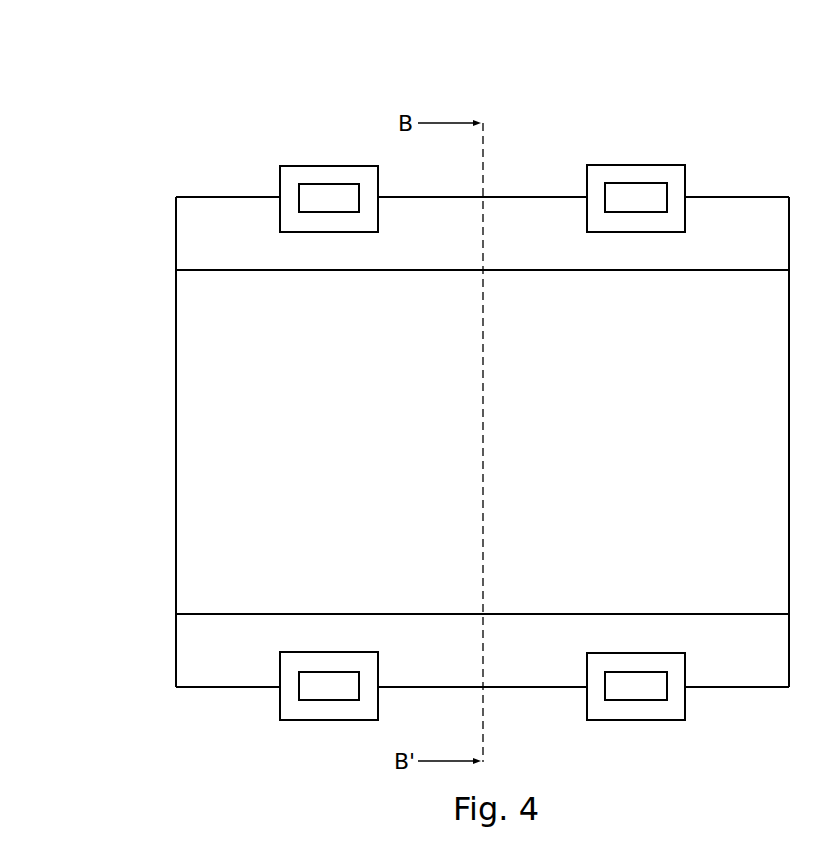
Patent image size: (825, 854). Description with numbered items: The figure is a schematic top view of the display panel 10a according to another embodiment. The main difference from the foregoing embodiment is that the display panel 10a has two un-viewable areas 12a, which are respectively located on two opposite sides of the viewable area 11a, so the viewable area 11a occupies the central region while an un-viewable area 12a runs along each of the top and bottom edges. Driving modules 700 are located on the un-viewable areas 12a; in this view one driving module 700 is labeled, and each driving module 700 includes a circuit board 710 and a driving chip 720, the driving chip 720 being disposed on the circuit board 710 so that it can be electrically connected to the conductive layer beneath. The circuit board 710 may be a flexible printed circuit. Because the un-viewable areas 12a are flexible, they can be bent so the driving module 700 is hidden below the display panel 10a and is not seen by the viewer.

The display panel 10a is at (96, 48).
The viewable area 11a is at (192, 455).
The un-viewable area 12a is at (192, 238).
The driving module 700 is at (321, 144).
The circuit board 710 is at (343, 175).
The driving chip 720 is at (363, 101).